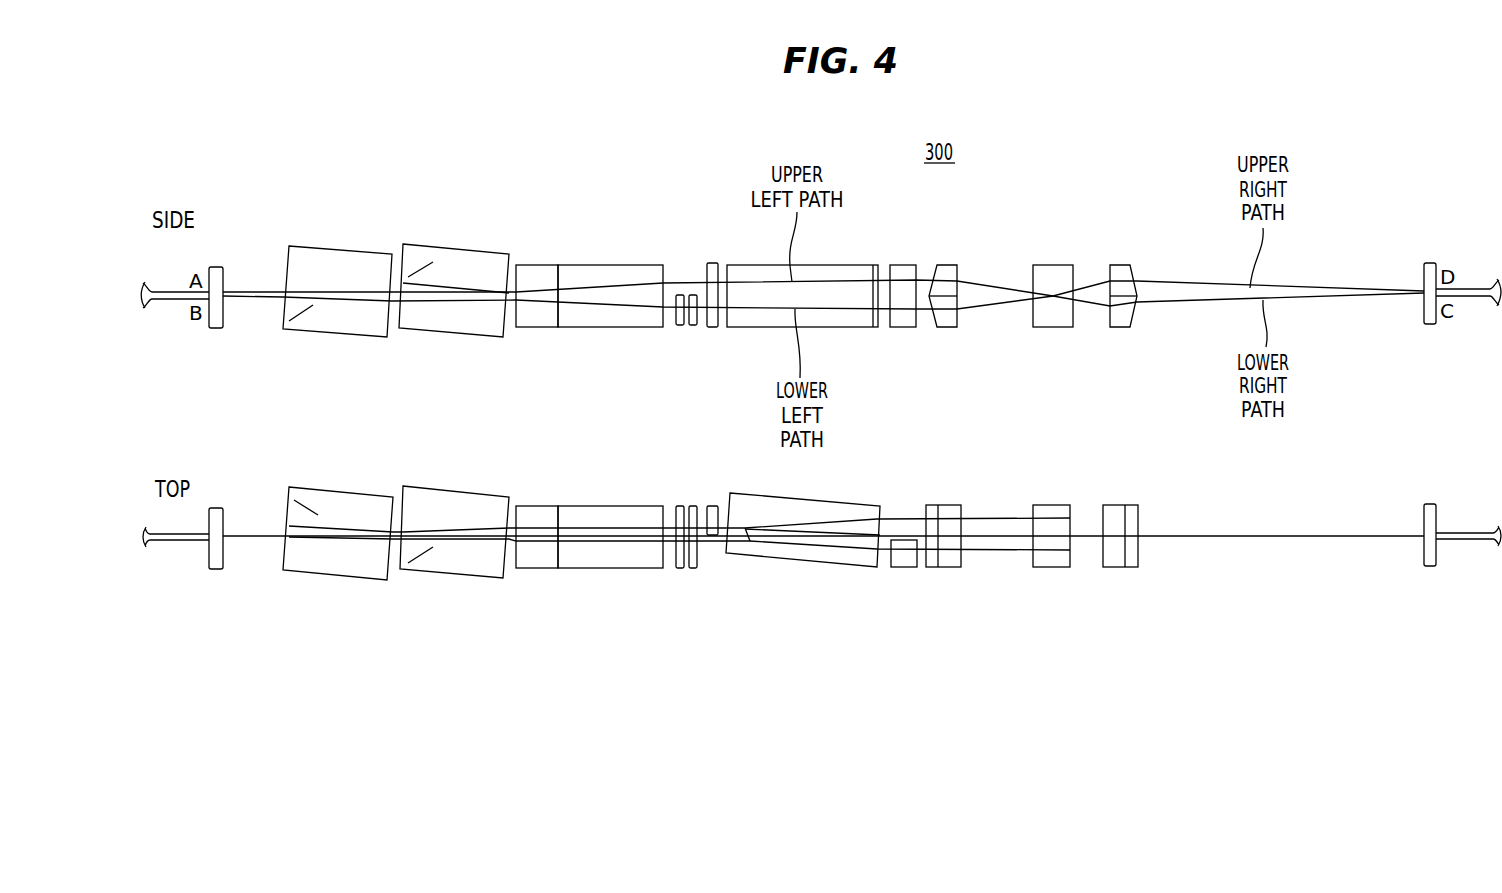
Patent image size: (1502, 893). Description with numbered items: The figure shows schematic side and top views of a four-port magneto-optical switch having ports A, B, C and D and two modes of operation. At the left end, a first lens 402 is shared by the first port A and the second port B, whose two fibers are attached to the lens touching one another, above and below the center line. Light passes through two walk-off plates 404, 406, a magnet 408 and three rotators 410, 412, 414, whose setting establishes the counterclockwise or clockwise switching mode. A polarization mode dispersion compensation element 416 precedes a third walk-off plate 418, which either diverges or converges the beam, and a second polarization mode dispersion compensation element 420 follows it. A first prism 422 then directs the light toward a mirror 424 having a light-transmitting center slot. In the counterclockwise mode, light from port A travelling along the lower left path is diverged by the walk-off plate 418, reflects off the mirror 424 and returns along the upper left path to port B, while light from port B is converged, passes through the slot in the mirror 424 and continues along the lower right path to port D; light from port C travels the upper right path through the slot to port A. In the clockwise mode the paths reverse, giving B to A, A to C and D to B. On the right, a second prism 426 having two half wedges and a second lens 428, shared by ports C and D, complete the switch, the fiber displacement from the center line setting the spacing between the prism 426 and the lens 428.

The first lens 402 is at (214, 330).
The walk-off plate 404 is at (331, 337).
The walk-off plate 406 is at (452, 337).
The magnet 408 is at (619, 327).
The rotator 410 is at (557, 327).
The rotator 412 is at (680, 325).
The rotator 414 is at (693, 325).
The polarization mode dispersion compensation element 416 is at (712, 327).
The third walk-off plate 418 is at (853, 327).
The polarization mode dispersion compensation element 420 is at (904, 540).
The first prism 422 is at (947, 327).
The mirror 424 is at (1041, 328).
The second prism 426 is at (1112, 327).
The second lens 428 is at (1428, 324).